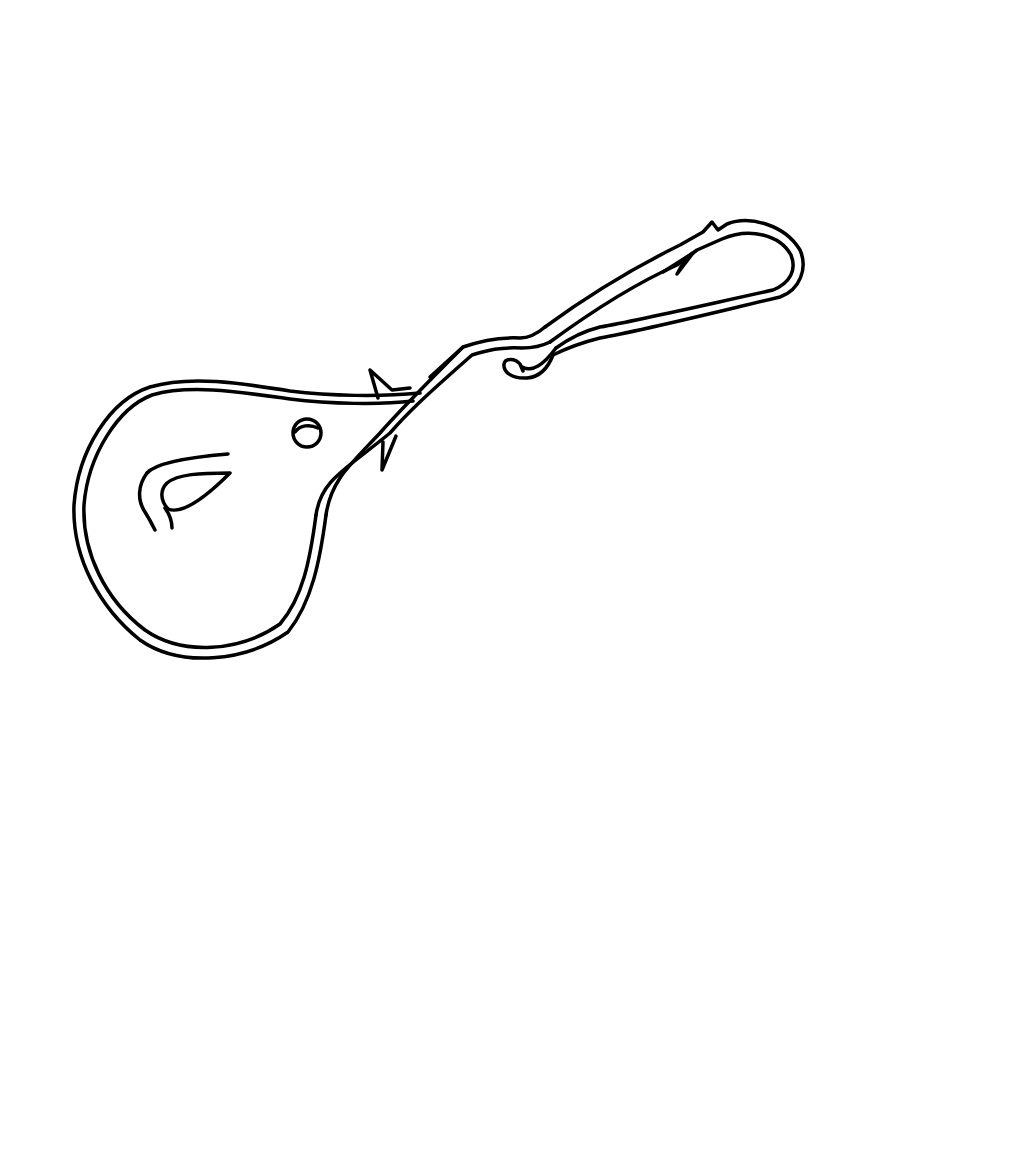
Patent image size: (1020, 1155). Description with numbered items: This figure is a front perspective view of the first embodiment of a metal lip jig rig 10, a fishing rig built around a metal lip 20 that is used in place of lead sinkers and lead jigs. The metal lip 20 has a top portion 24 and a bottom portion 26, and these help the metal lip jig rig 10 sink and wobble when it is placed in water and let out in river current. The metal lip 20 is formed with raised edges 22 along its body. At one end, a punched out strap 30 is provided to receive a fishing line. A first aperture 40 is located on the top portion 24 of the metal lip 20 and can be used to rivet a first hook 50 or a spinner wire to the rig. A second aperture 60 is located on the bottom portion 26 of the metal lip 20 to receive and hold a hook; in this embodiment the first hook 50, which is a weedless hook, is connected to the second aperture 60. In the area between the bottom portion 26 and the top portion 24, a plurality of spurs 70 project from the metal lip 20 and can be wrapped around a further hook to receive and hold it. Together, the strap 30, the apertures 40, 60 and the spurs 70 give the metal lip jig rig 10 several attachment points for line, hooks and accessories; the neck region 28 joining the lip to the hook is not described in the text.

The metal lip jig rig 10 is at (761, 142).
The metal lip 20 is at (232, 578).
The raised edges 22 is at (290, 629).
The top portion 24 is at (343, 397).
The bottom portion 26 is at (457, 397).
The shank 28 is at (380, 432).
The punched out strap 30 is at (147, 473).
The first aperture 40 is at (294, 432).
The first hook 50 is at (737, 220).
The second aperture 60 is at (523, 383).
The spurs 70 is at (397, 440).